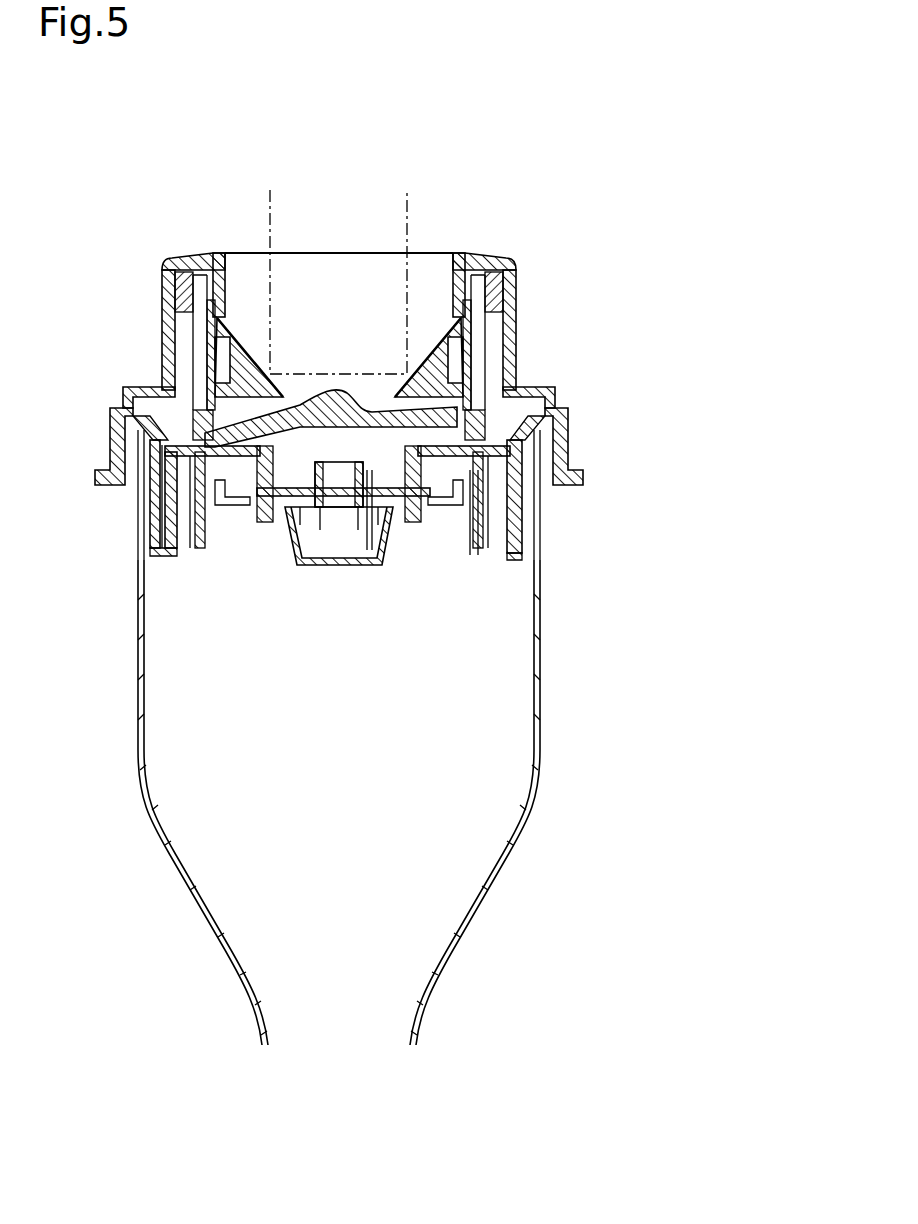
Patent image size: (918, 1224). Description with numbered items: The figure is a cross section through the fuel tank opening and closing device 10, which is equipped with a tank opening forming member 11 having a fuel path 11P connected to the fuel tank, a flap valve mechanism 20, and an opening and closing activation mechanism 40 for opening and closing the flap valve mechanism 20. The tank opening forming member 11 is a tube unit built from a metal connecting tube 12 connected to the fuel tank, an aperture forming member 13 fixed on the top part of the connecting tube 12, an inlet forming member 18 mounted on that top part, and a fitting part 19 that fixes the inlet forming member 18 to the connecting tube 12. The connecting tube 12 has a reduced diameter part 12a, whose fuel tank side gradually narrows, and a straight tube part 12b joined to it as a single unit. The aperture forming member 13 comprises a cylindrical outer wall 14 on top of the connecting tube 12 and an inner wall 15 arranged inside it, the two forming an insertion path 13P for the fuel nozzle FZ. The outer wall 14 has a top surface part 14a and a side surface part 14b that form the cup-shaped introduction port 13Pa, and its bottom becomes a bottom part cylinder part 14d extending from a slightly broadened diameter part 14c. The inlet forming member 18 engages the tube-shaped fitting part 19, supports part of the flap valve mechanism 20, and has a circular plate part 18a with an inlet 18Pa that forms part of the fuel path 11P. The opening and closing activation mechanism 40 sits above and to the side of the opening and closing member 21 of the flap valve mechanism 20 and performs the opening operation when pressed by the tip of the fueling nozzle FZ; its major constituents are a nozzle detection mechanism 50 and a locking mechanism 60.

The fuel tank opening and closing device 10 is at (577, 234).
The tank opening forming member 11 is at (651, 360).
The fuel path 11P is at (369, 738).
The connecting tube 12 is at (540, 705).
The reduced diameter part 12a is at (493, 886).
The straight tube part 12b is at (418, 1022).
The aperture forming member 13 is at (523, 375).
The insertion path 13P is at (363, 336).
The introduction port 13Pa is at (427, 253).
The outer wall 14 is at (66, 205).
The top surface part 14a is at (178, 252).
The side surface part 14b is at (160, 278).
The broadened diameter part 14c is at (130, 390).
The bottom part cylinder part 14d is at (118, 412).
The inner wall 15 is at (453, 257).
The inlet forming member 18 is at (538, 486).
The circular plate part 18a is at (472, 457).
The inlet 18Pa is at (426, 517).
The fitting part 19 is at (533, 545).
The flap valve mechanism 20 is at (260, 550).
The opening and closing member 21 is at (148, 500).
The opening and closing activation mechanism 40 is at (650, 238).
The nozzle detection mechanism 50 is at (447, 360).
The locking mechanism 60 is at (460, 410).
The fuel nozzle FZ is at (268, 232).